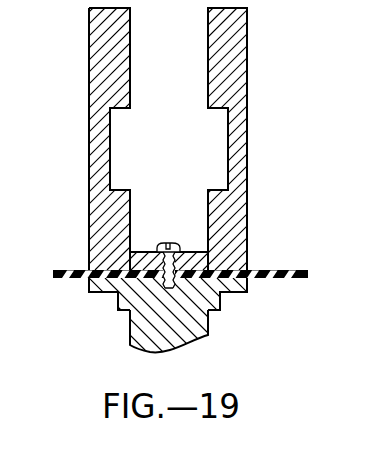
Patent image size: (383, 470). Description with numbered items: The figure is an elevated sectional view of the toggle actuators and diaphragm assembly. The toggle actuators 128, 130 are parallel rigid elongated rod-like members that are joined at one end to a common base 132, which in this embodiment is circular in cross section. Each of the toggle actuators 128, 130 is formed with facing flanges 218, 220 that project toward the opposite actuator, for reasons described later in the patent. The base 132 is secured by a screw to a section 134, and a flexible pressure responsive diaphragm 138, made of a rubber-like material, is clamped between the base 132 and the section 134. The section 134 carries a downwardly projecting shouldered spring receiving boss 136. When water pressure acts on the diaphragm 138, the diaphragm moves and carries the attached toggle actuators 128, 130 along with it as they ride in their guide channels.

The toggle actuator 128 is at (247, 128).
The toggle actuator 130 is at (89, 150).
The common base 132 is at (247, 254).
The section 134 is at (247, 284).
The shouldered spring receiving boss 136 is at (209, 323).
The pressure responsive diaphragm 138 is at (278, 268).
The facing flange 218 is at (219, 111).
The facing flange 220 is at (221, 187).